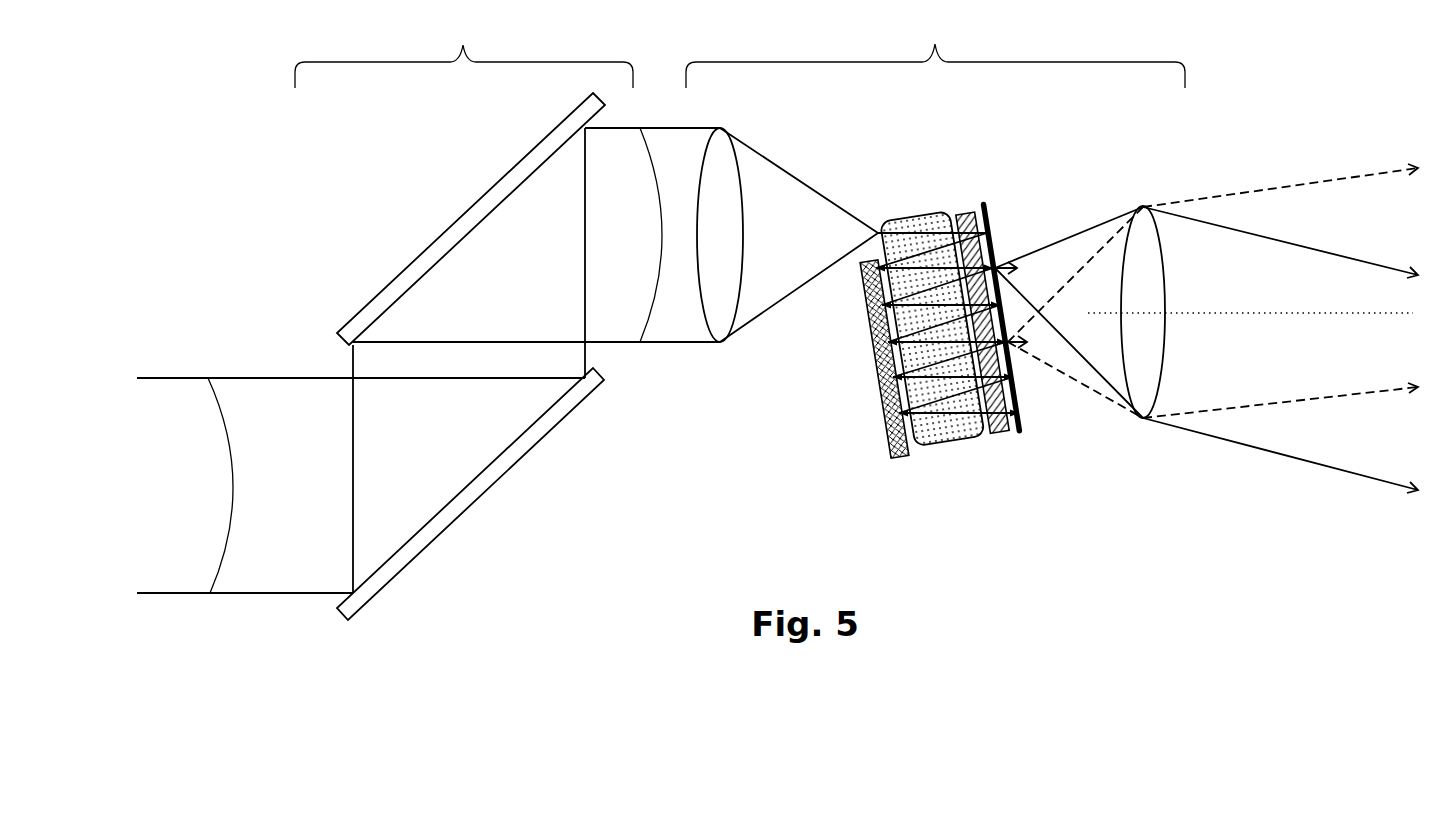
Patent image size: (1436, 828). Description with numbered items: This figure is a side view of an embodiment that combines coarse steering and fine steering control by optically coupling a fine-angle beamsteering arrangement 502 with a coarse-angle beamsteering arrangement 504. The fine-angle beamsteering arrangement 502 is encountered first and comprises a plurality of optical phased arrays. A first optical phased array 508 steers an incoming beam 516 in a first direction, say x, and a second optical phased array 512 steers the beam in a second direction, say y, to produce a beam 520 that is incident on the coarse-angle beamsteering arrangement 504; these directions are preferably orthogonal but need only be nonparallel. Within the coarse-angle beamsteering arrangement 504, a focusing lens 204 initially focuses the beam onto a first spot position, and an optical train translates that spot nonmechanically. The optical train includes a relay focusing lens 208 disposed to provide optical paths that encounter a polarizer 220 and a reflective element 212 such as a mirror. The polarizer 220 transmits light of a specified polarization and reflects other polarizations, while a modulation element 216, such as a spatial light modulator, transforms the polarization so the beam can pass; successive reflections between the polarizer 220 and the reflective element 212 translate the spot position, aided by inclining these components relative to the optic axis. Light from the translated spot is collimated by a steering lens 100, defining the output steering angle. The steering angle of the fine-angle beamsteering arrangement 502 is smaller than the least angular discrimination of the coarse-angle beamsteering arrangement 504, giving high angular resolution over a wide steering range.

The steering lens 100 is at (1165, 357).
The focusing lens 204 is at (720, 127).
The relay focusing lens 208 is at (922, 213).
The reflective element 212 is at (902, 457).
The modulation element 216 is at (1000, 433).
The polarizer 220 is at (995, 240).
The fine-angle beamsteering arrangement 502 is at (464, 51).
The coarse-angle beamsteering arrangement 504 is at (935, 51).
The first optical phased array 508 is at (535, 448).
The second optical phased array 512 is at (362, 307).
The beam 516 is at (361, 485).
The beam 520 is at (536, 235).